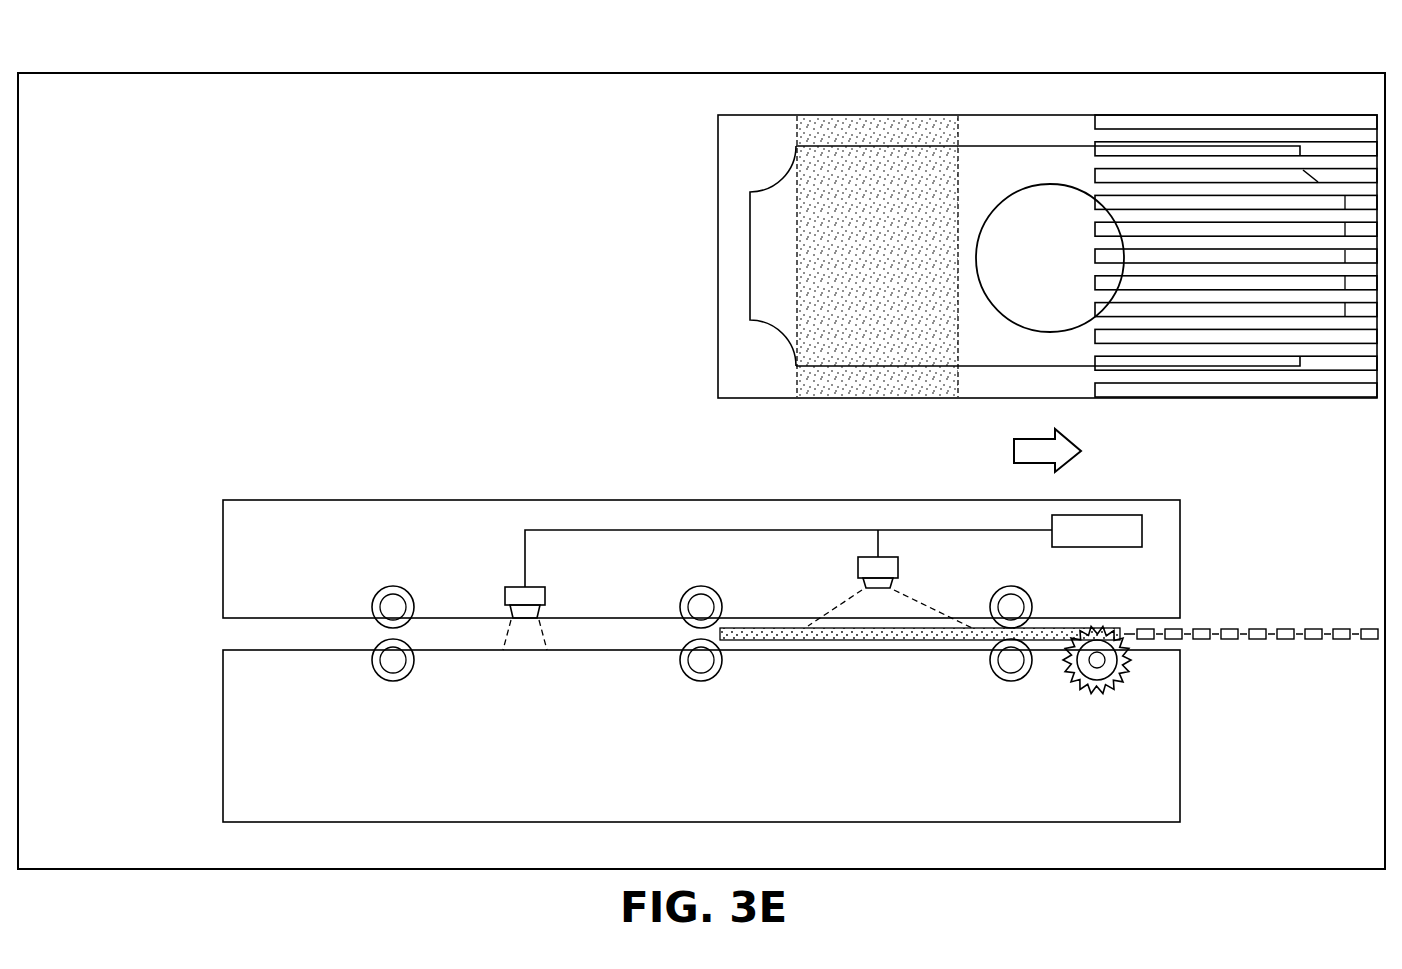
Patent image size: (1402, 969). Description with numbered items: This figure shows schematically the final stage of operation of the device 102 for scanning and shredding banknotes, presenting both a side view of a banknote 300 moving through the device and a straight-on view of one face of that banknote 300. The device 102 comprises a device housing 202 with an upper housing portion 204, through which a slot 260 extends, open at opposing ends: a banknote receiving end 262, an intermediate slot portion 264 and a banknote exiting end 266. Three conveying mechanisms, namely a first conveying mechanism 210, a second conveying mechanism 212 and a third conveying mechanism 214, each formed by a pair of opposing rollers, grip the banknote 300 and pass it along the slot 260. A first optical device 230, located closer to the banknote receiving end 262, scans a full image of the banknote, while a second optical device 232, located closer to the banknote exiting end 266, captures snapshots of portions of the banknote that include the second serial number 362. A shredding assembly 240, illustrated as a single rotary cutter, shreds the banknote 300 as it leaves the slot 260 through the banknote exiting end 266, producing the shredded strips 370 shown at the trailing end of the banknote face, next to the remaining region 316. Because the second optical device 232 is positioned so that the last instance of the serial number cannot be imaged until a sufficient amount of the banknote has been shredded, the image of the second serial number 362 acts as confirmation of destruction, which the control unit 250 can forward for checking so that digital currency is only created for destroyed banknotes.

The device 102 is at (620, 500).
The device housing 202 is at (222, 556).
The upper housing portion 204 is at (300, 551).
The first conveying mechanism 210 is at (394, 588).
The second conveying mechanism 212 is at (686, 598).
The third conveying mechanism 214 is at (1028, 600).
The first optical device 230 is at (513, 586).
The second optical device 232 is at (856, 566).
The shredding assembly 240 is at (1096, 694).
The control unit 250 is at (1142, 530).
The slot 260 is at (440, 645).
The banknote receiving end 262 is at (222, 634).
The intermediate slot portion 264 is at (607, 645).
The banknote exiting end 266 is at (1187, 645).
The banknote 300 is at (718, 270).
The serial number region 316 is at (877, 398).
The second serial number 362 is at (852, 139).
The shredded strips 370 is at (1377, 403).